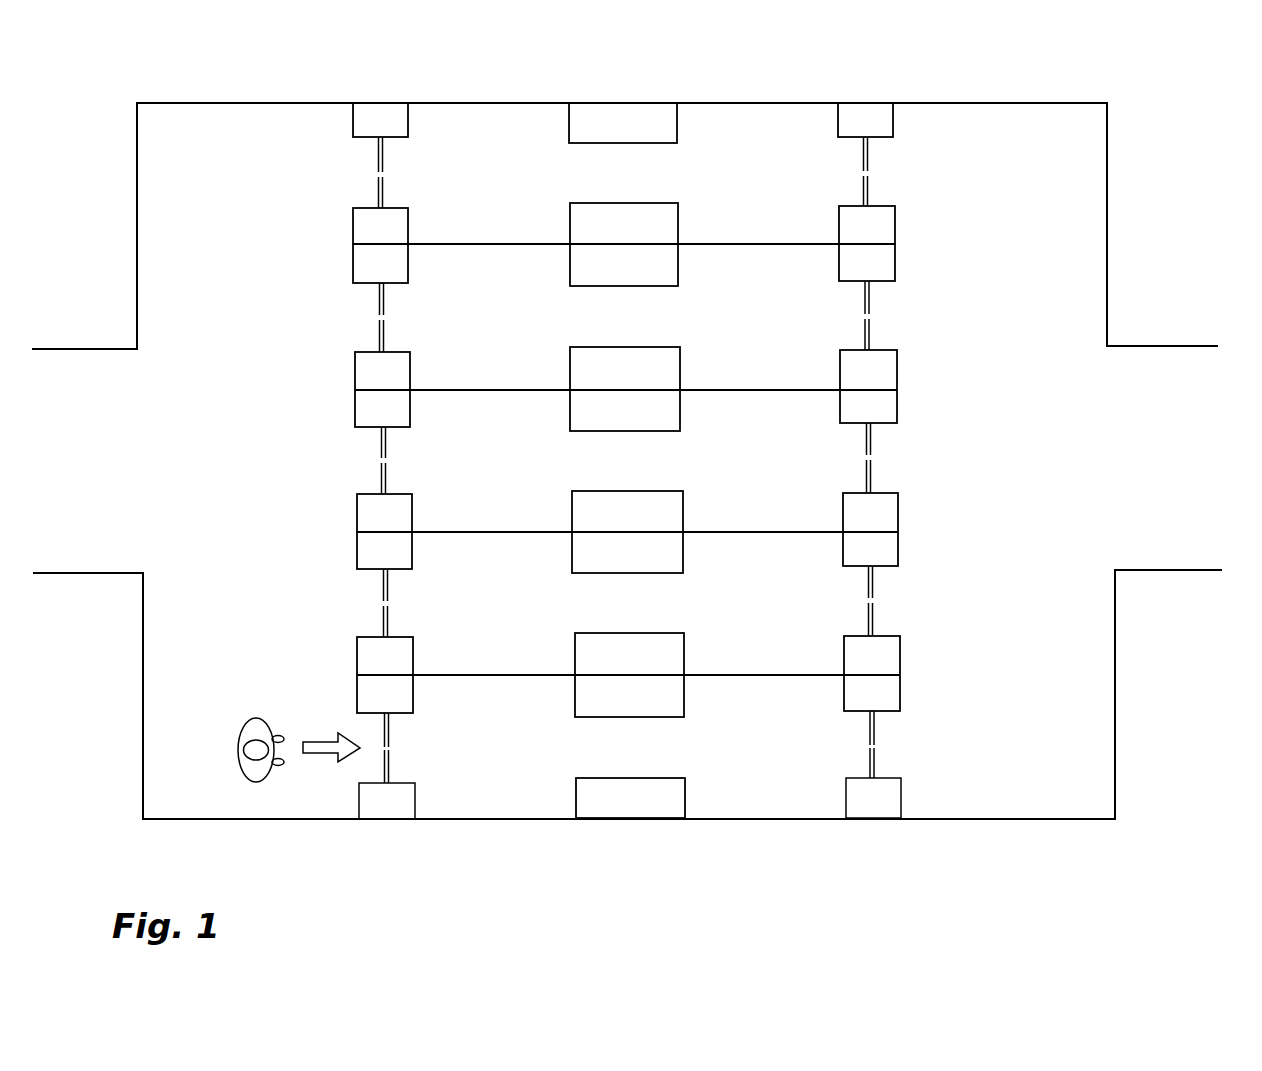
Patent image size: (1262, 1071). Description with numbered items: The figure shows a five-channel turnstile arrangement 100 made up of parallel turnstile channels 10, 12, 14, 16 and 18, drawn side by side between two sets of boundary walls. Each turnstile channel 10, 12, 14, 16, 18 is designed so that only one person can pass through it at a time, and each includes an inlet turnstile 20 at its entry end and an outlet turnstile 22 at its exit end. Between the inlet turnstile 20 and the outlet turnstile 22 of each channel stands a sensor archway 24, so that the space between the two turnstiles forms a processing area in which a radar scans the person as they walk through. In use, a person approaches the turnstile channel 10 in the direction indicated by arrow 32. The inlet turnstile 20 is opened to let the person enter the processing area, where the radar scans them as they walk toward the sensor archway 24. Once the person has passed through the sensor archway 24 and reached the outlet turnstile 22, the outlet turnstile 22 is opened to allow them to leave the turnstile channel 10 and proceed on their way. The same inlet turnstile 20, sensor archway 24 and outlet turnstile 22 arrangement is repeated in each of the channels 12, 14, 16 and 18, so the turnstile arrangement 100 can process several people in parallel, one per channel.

The turnstile arrangement 100 is at (1086, 888).
The turnstile channel 10 is at (812, 764).
The turnstile channel 12 is at (830, 606).
The turnstile channel 14 is at (822, 450).
The turnstile channel 16 is at (807, 324).
The turnstile channel 18 is at (744, 133).
The inlet turnstile 20 is at (248, 717).
The outlet turnstile 22 is at (902, 760).
The sensor archway 24 is at (638, 796).
The arrow 32 is at (317, 755).